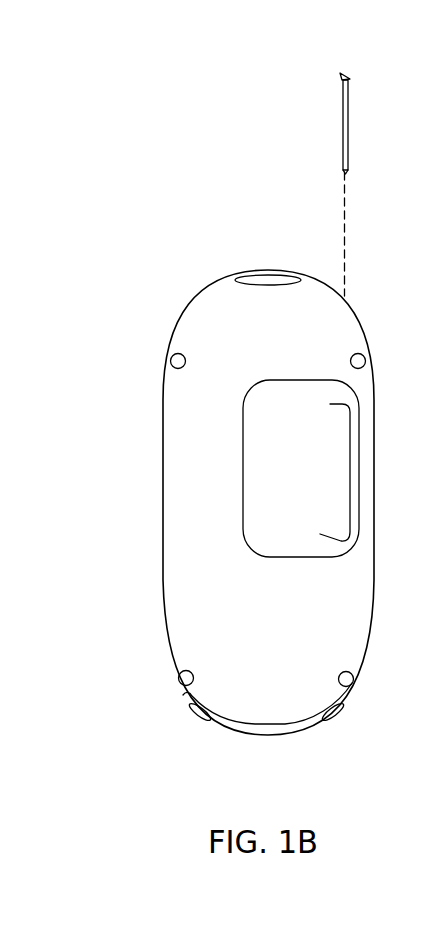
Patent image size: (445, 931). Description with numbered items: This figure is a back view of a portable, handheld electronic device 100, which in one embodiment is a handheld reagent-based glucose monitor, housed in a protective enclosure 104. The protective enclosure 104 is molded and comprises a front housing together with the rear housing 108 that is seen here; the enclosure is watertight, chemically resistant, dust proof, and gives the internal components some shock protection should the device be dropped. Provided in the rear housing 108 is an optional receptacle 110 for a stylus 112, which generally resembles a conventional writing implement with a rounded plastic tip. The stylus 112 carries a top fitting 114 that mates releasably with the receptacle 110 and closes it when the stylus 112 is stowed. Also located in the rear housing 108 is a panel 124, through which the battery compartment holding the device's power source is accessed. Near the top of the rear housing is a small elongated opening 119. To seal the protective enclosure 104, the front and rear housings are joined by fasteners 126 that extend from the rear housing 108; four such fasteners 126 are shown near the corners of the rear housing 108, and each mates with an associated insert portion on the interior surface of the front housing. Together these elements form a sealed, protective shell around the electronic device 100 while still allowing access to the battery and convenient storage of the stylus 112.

The electronic device 100 is at (175, 208).
The protective enclosure 104 is at (168, 332).
The rear housing 108 is at (178, 440).
The receptacle 110 is at (353, 302).
The stylus 112 is at (348, 131).
The top fitting 114 is at (350, 79).
The speaker opening 119 is at (268, 281).
The panel 124 is at (340, 480).
The fasteners 126 is at (171, 358).